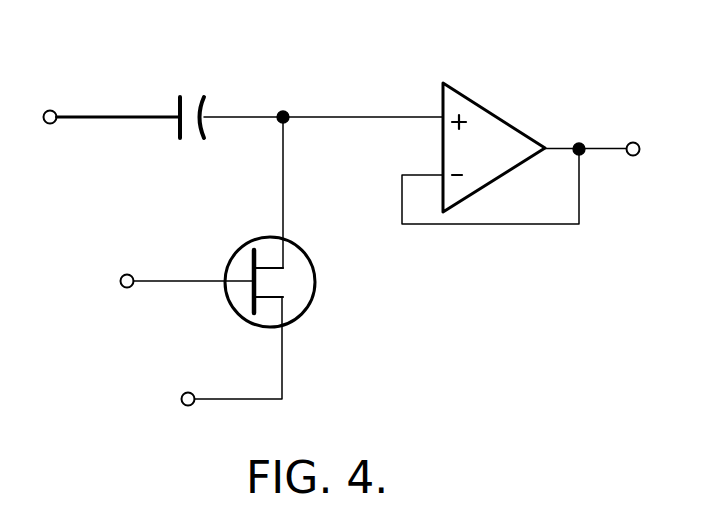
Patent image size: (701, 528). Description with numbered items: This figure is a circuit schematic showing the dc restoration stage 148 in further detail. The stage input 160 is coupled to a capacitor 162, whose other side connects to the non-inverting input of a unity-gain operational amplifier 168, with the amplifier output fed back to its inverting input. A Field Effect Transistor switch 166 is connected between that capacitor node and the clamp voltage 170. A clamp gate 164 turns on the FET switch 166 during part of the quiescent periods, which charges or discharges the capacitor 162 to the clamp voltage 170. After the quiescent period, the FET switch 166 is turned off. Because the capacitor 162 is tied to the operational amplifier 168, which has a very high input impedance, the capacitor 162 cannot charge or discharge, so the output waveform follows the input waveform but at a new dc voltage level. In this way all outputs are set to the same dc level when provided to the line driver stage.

The dc restoration stage 148 is at (268, 100).
The stage input 160 is at (58, 112).
The capacitor 162 is at (182, 96).
The clamp gate 164 is at (132, 275).
The FET switch 166 is at (315, 258).
The unity-gain operational amplifier 168 is at (483, 103).
The clamp voltage 170 is at (183, 393).